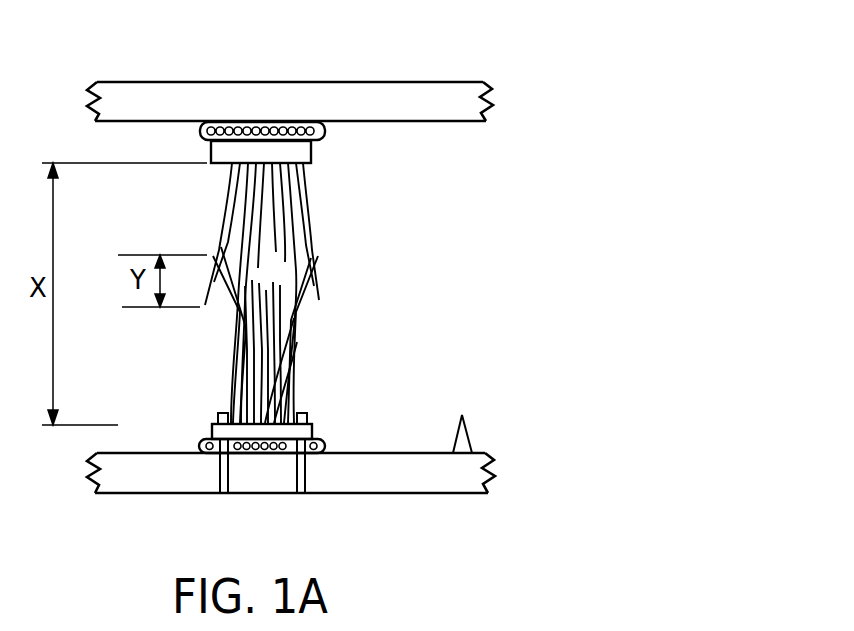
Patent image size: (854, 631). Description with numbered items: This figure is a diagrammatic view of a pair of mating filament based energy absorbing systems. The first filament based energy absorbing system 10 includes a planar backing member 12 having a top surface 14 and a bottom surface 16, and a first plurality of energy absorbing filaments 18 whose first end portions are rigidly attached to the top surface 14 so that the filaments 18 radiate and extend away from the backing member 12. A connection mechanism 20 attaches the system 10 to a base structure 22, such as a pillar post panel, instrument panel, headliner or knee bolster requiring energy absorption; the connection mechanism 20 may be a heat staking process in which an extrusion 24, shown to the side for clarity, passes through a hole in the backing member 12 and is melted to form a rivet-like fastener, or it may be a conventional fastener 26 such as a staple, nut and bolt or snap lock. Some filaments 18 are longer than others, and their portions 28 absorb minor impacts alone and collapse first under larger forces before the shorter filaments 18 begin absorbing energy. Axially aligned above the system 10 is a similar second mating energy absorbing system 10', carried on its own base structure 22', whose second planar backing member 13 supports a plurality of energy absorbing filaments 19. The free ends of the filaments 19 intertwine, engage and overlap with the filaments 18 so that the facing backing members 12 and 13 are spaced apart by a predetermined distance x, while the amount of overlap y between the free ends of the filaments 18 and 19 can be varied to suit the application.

The filament based energy absorbing system 10 is at (500, 285).
The second mating energy absorbing system 10' is at (540, 138).
The backing member 12 is at (213, 427).
The second planar backing member 13 is at (312, 147).
The top surface 14 is at (280, 418).
The bottom surface 16 is at (267, 455).
The first plurality of energy absorbing filaments 18 is at (232, 345).
The plurality of energy absorbing filaments 19 is at (305, 202).
The connection mechanism 20 is at (323, 443).
The base structure 22 is at (291, 505).
The base structure 22' is at (290, 69).
The extrusion 24 is at (468, 433).
The conventional fastener 26 is at (222, 488).
The portions of the longer filaments 28 is at (312, 258).